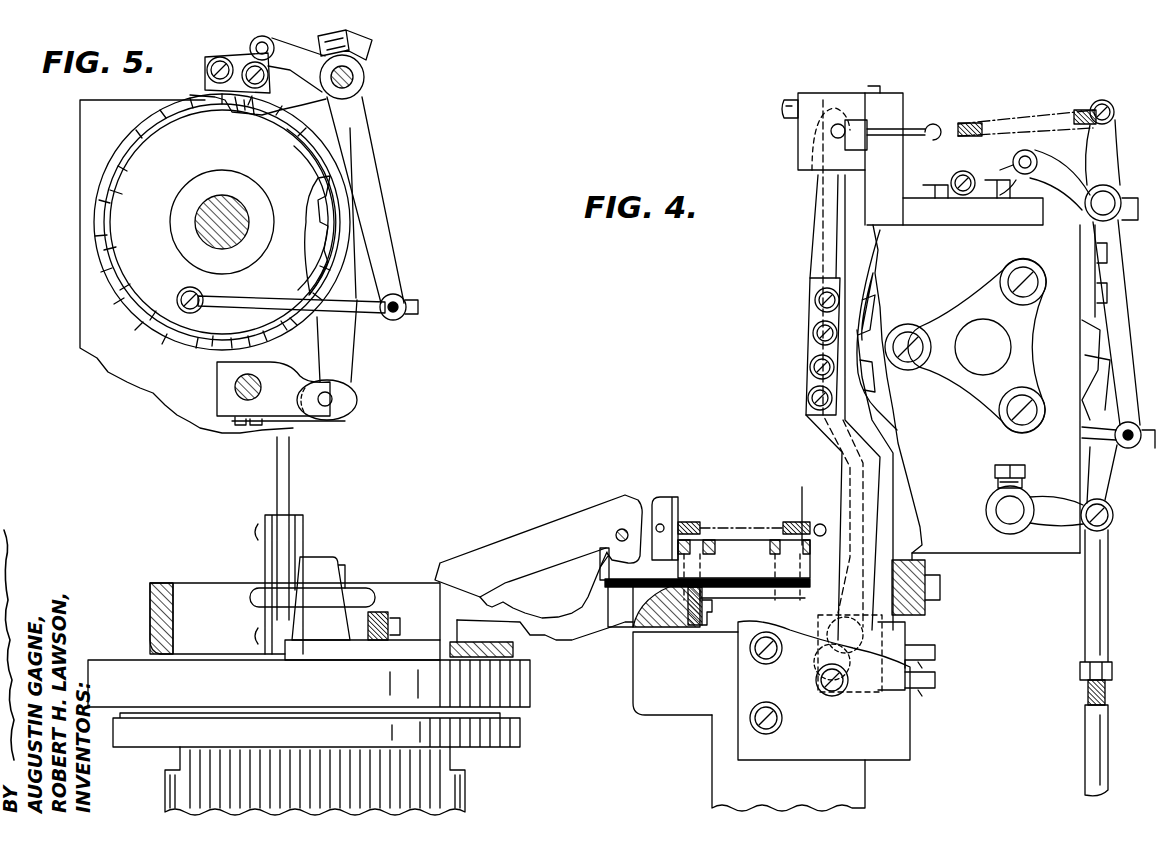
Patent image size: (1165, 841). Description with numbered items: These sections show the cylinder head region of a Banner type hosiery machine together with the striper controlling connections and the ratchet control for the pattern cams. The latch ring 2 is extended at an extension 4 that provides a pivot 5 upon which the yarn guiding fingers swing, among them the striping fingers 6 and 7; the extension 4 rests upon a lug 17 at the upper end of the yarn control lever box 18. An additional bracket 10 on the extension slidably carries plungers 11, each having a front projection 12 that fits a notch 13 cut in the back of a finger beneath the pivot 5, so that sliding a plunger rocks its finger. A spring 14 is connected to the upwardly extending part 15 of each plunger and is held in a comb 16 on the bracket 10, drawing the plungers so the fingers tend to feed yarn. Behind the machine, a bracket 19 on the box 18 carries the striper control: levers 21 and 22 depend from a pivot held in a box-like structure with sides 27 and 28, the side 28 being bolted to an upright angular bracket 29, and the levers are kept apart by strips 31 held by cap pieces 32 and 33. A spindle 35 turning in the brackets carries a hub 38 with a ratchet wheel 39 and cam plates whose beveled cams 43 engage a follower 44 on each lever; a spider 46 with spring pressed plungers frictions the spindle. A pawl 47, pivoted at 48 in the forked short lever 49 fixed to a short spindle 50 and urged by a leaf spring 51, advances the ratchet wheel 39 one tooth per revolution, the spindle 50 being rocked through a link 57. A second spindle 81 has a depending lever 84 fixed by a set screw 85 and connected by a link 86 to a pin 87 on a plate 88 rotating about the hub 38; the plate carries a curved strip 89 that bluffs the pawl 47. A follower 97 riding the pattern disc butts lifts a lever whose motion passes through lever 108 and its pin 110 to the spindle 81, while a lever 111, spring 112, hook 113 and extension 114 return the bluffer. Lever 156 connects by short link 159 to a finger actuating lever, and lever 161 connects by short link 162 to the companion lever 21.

In FIG. 4, the latch ring 2 is at (375, 590).
In FIG. 4, the extension 4 is at (538, 636).
In FIG. 4, the pivot 5 is at (625, 530).
In FIG. 4, the yarn guiding finger 6 is at (538, 548).
In FIG. 4, the yarn guiding finger 7 is at (565, 635).
In FIG. 4, the bracket 10 is at (716, 594).
In FIG. 4, the plunger 11 is at (707, 570).
In FIG. 4, the projection 12 is at (609, 603).
In FIG. 4, the notch 13 is at (604, 548).
In FIG. 4, the spring 14 is at (682, 524).
In FIG. 4, the upwardly extending part 15 is at (656, 505).
In FIG. 4, the comb 16 is at (804, 496).
In FIG. 4, the lug 17 is at (685, 673).
In FIG. 4, the yarn control lever box 18 is at (788, 763).
In FIG. 4, the bracket 19 is at (909, 643).
In FIG. 4, the lever 21 is at (870, 537).
In FIG. 4, the lever 22 is at (888, 492).
In FIG. 4, the side 27 is at (800, 160).
In FIG. 4, the side 28 is at (880, 108).
In FIG. 4, the bracket 29 is at (978, 187).
In FIG. 4, the strip 31 is at (820, 110).
In FIG. 4, the cap piece 32 is at (798, 95).
In FIG. 4, the cap piece 33 is at (876, 90).
In FIG. 5, the spindle 35 is at (200, 210).
In FIG. 5, the hub 38 is at (246, 194).
In FIG. 5, the ratchet wheel 39 is at (330, 215).
In FIG. 5, the beveled cam 43 is at (100, 163).
In FIG. 4, the follower 44 is at (808, 357).
In FIG. 4, the spider 46 is at (985, 302).
In FIG. 5, the pawl 47 is at (346, 346).
In FIG. 4, the pawl 47 is at (1104, 482).
In FIG. 5, the pivot 48 is at (333, 401).
In FIG. 5, the short lever 49 is at (273, 389).
In FIG. 5, the short spindle 50 is at (234, 386).
In FIG. 4, the short spindle 50 is at (1000, 506).
In FIG. 5, the leaf spring 51 is at (333, 422).
In FIG. 4, the link 57 is at (1086, 590).
In FIG. 5, the second spindle 81 is at (354, 78).
In FIG. 4, the second spindle 81 is at (1108, 214).
In FIG. 5, the depending lever 84 is at (366, 125).
In FIG. 4, the depending lever 84 is at (1122, 334).
In FIG. 5, the set screw 85 is at (320, 40).
In FIG. 5, the link 86 is at (250, 304).
In FIG. 4, the link 86 is at (1138, 447).
In FIG. 5, the pin 87 is at (177, 300).
In FIG. 5, the plate 88 is at (222, 222).
In FIG. 5, the curved strip 89 is at (318, 270).
In FIG. 5, the follower 97 is at (210, 96).
In FIG. 5, the lever 108 is at (296, 72).
In FIG. 5, the pin 110 is at (256, 48).
In FIG. 4, the lever 111 is at (1112, 134).
In FIG. 4, the spring 112 is at (972, 130).
In FIG. 4, the hook 113 is at (920, 136).
In FIG. 4, the extension 114 is at (862, 148).
In FIG. 4, the lever 156 is at (936, 650).
In FIG. 4, the short link 159 is at (935, 640).
In FIG. 4, the lever 161 is at (935, 680).
In FIG. 4, the short link 162 is at (936, 672).